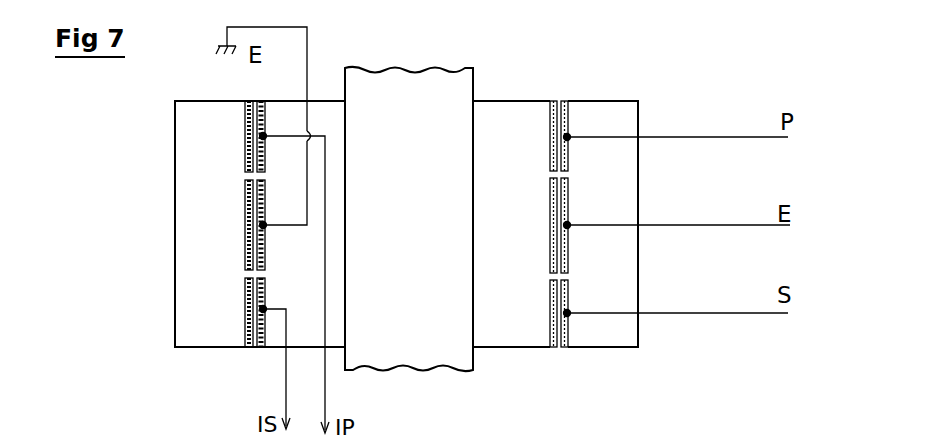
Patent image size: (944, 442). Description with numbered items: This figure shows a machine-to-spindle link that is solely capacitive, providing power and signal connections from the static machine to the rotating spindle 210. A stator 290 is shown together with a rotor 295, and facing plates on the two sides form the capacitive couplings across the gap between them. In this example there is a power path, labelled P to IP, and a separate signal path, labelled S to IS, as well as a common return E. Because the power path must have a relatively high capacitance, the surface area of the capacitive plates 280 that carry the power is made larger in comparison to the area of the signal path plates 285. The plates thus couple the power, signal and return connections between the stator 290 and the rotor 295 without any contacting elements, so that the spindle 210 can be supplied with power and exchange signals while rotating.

The spindle 210 is at (428, 196).
The capacitive plates 280 is at (566, 108).
The signal path plates 285 is at (543, 335).
The stator 290 is at (619, 118).
The rotor 295 is at (500, 310).